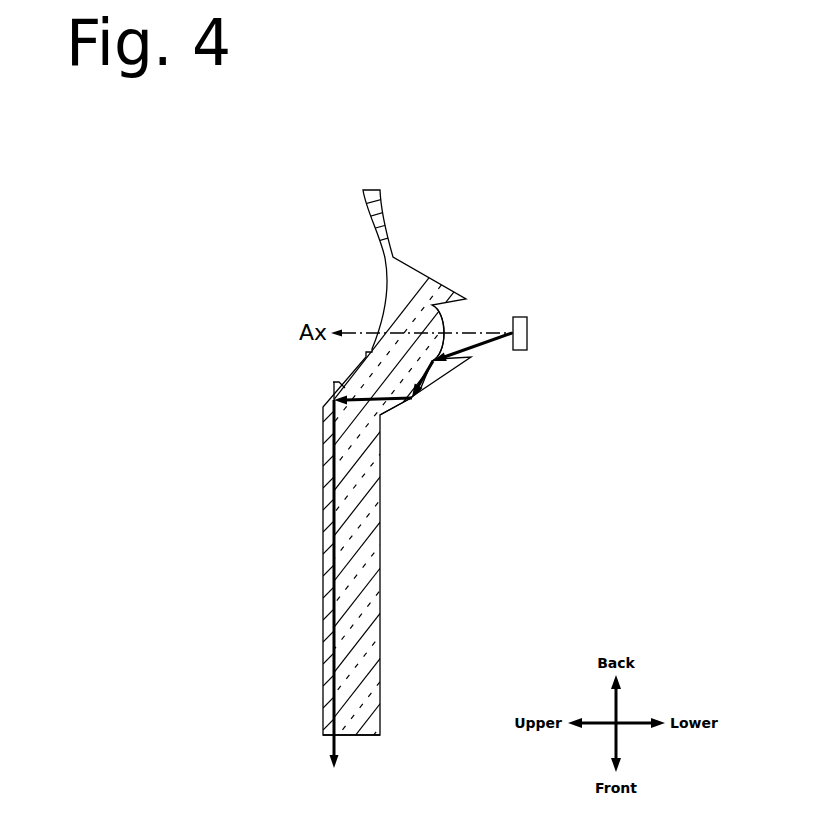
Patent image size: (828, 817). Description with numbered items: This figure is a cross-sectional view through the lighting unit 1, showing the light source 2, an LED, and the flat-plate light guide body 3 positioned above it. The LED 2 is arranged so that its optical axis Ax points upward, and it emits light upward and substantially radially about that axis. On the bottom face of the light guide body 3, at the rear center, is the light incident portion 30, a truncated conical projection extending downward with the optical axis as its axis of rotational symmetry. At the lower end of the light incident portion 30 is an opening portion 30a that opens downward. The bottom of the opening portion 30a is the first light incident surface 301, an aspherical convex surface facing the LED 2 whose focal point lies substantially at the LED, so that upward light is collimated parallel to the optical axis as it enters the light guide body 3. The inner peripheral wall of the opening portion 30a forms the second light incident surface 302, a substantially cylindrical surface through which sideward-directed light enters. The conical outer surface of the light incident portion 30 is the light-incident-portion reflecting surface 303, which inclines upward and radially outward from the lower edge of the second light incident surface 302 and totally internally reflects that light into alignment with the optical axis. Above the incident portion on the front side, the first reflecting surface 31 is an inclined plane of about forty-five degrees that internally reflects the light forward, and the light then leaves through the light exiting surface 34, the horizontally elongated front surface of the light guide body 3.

The lighting unit 1 is at (245, 212).
The light source 2 is at (527, 322).
The light guide body 3 is at (323, 577).
The light incident portion 30 is at (455, 269).
The opening portion 30a is at (467, 340).
The first light incident surface 301 is at (439, 323).
The second light incident surface 302 is at (472, 359).
The light-incident-portion reflecting surface 303 is at (443, 388).
The first reflecting surface 31 is at (333, 382).
The light exiting surface 34 is at (362, 737).